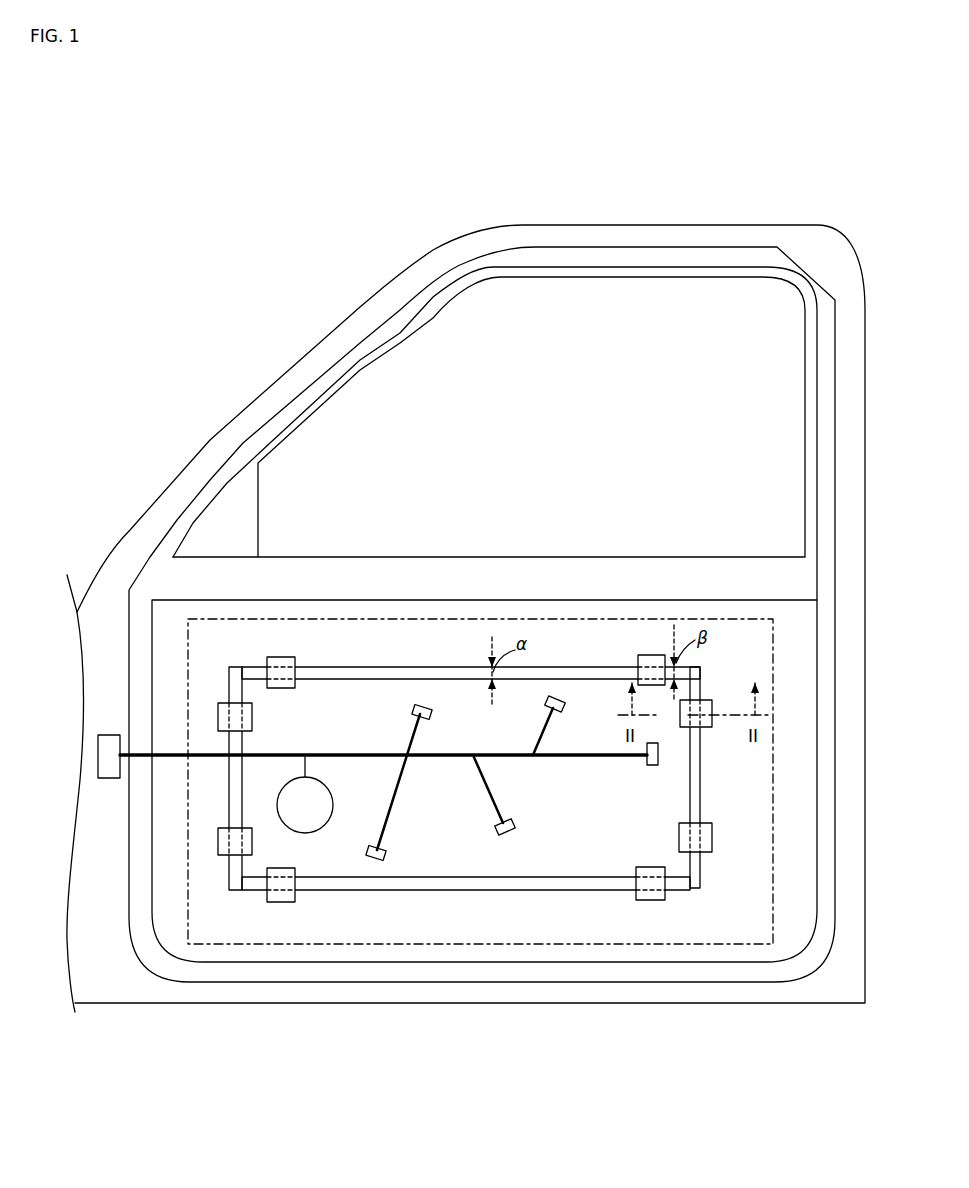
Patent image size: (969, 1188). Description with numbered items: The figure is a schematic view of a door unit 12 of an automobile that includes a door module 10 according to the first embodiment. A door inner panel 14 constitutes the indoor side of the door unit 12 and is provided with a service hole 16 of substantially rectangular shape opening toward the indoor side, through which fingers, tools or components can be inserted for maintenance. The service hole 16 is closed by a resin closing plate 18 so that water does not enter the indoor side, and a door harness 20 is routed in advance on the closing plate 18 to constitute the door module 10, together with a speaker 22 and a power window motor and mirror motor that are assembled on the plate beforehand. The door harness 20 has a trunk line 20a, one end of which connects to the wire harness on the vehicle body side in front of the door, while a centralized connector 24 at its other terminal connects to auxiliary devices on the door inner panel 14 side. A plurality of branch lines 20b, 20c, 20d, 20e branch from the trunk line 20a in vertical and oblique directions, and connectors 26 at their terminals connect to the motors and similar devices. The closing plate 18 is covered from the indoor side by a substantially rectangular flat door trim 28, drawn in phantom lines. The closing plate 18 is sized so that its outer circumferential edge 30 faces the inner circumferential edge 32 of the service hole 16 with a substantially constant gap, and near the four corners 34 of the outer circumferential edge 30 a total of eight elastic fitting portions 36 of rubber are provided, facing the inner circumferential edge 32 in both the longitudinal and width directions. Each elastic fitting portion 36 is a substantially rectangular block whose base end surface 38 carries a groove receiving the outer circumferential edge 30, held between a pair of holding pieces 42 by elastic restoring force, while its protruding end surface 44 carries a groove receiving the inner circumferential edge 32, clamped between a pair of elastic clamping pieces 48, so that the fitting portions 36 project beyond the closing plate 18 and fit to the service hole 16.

The door module 10 is at (470, 727).
The door unit 12 is at (572, 172).
The door inner panel 14 is at (573, 637).
The service hole 16 is at (600, 888).
The closing plate 18 is at (440, 853).
The door harness 20 is at (390, 779).
The trunk line 20a is at (262, 753).
The branch line 20b is at (398, 795).
The branch line 20c is at (412, 736).
The branch line 20d is at (490, 790).
The branch line 20e is at (540, 733).
The speaker 22 is at (305, 807).
The centralized connector 24 is at (648, 773).
The connector 26 is at (430, 718).
The door trim 28 is at (773, 790).
The outer circumferential edge 30 is at (402, 682).
The inner circumferential edge 32 is at (392, 665).
The corner 34 is at (248, 679).
The elastic fitting portion 36 is at (283, 660).
The base end surface 38 is at (640, 790).
The holding piece 42 is at (688, 681).
The protruding end surface 44 is at (712, 716).
The elastic clamping piece 48 is at (700, 705).